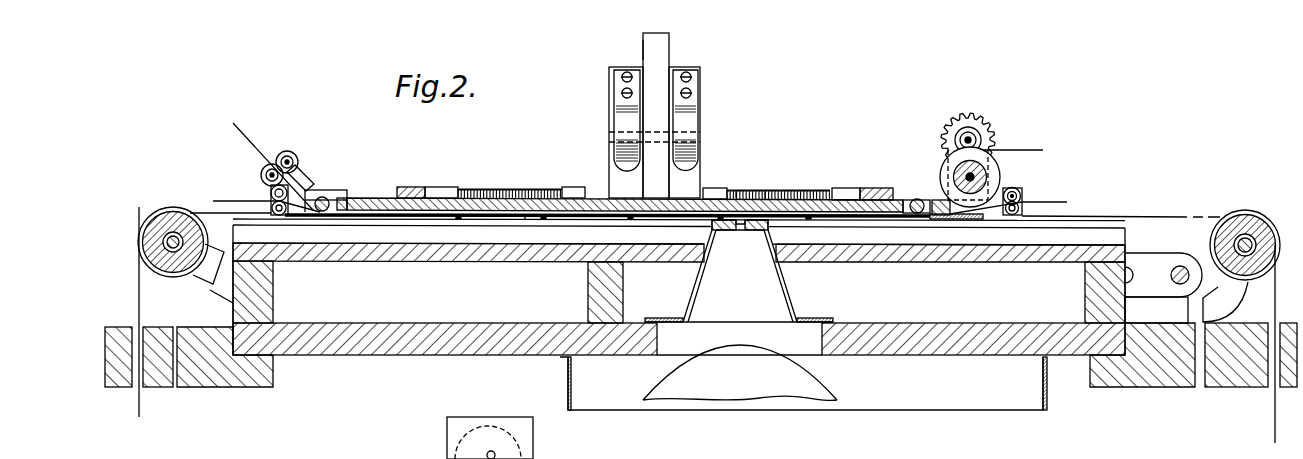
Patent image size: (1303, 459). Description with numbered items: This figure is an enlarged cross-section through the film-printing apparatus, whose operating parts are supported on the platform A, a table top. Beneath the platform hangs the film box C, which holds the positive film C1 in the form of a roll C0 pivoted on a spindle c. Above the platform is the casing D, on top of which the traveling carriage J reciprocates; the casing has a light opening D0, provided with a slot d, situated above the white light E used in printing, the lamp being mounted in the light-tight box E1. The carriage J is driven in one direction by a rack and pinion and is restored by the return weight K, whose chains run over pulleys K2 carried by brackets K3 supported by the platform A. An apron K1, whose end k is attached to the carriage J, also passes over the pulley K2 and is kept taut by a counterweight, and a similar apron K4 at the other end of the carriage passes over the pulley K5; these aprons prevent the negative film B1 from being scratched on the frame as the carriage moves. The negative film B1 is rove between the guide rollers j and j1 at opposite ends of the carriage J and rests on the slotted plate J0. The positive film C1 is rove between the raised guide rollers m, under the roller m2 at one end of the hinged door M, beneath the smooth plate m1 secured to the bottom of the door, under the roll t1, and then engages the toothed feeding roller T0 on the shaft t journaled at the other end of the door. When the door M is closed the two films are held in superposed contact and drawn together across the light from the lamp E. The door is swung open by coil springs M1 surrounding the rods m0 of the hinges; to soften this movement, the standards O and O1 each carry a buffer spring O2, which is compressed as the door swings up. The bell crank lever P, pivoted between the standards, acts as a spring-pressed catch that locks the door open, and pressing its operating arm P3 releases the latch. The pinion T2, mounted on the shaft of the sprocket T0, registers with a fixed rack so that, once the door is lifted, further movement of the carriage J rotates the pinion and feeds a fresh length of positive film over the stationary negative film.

The platform A is at (1167, 387).
The negative film B1 is at (1067, 202).
The film box C is at (533, 447).
The roll of positive film C0 is at (483, 422).
The spindle c is at (470, 455).
The positive film C1 is at (644, 149).
The casing D is at (1075, 290).
The light opening D0 is at (739, 271).
The white light E is at (820, 390).
The light-tight box E1 is at (1047, 407).
The traveling carriage J is at (953, 275).
The slotted plate J0 is at (648, 265).
The guide roller j is at (285, 216).
The guide roller j1 is at (1013, 215).
The apron end k is at (300, 217).
The return weight K is at (634, 216).
The apron K1 is at (139, 326).
The pulleys K2 is at (165, 225).
The brackets K3 is at (195, 290).
The apron K4 is at (1272, 425).
The pulley K5 is at (1238, 222).
The hinged door M is at (842, 190).
The coil springs M1 is at (797, 190).
The raised guide rollers m is at (287, 152).
The rods m0 is at (527, 230).
The smooth plate m1 is at (917, 199).
The roller m2 is at (323, 196).
The standard O is at (697, 180).
The standard O1 is at (617, 177).
The buffer spring O2 is at (695, 113).
The bell crank lever P is at (700, 135).
The operating arm P3 is at (643, 57).
The slot d is at (740, 190).
The toothed feeding roller T0 is at (997, 182).
The pinion T2 is at (992, 125).
The shaft t is at (978, 177).
The roll t1 is at (929, 204).